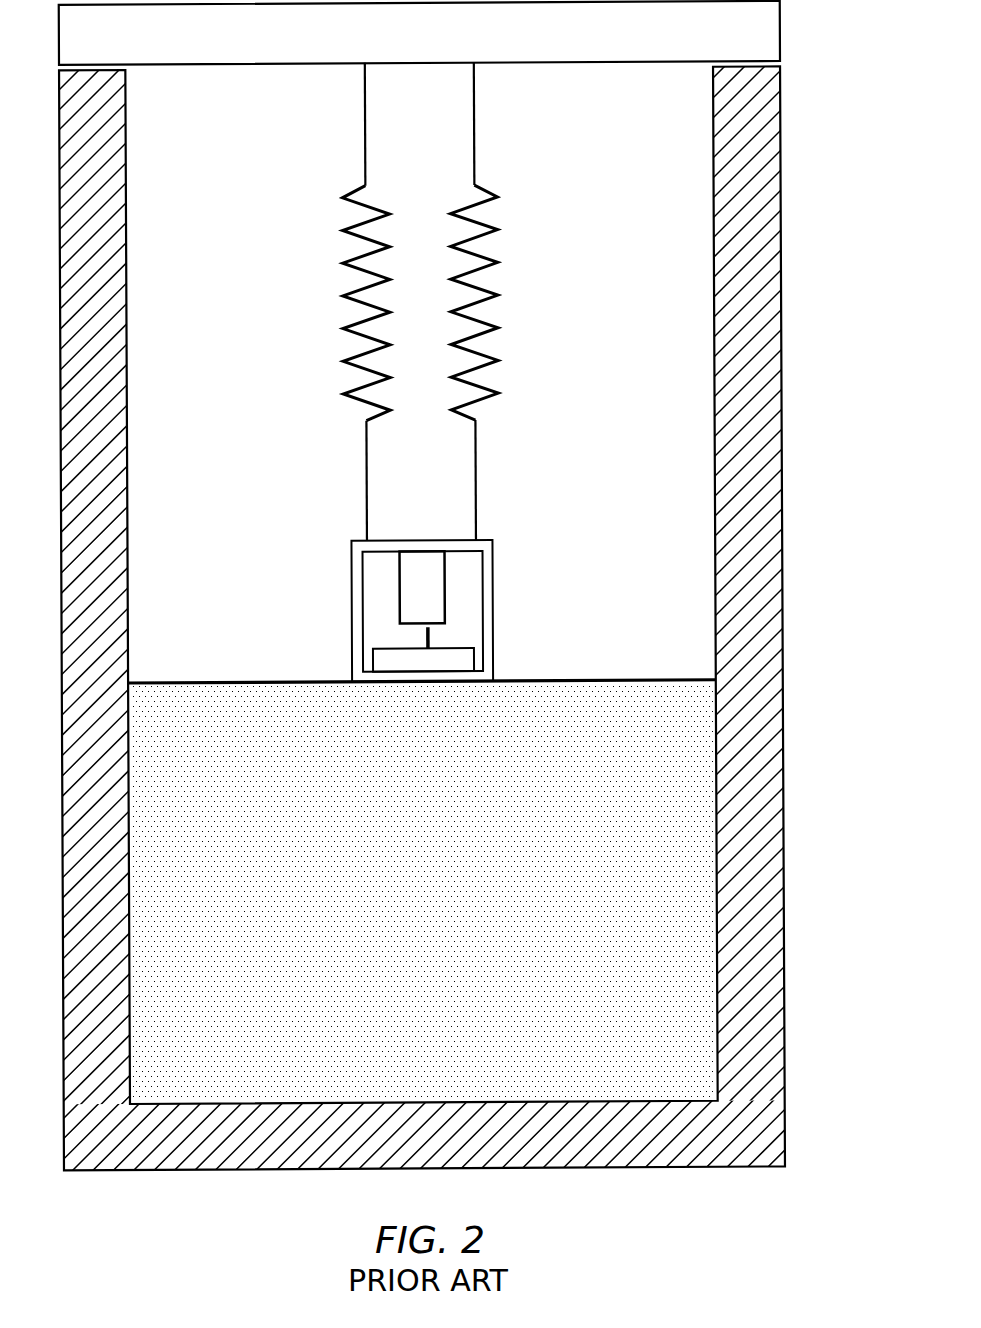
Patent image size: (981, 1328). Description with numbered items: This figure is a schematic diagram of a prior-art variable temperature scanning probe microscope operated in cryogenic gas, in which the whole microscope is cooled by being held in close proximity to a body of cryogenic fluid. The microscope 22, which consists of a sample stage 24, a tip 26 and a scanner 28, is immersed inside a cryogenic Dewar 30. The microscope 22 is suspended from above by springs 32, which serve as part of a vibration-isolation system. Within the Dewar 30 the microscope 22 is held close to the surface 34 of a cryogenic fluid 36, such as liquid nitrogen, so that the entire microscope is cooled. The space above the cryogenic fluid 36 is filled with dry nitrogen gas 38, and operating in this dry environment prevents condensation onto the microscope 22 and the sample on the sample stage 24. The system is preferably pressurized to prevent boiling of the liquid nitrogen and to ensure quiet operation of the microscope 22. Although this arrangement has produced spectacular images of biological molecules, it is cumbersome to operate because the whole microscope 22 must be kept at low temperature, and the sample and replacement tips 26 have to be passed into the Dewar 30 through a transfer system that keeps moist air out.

The microscope 22 is at (357, 606).
The sample stage 24 is at (467, 659).
The tip 26 is at (435, 638).
The scanner 28 is at (428, 562).
The cryogenic Dewar 30 is at (768, 464).
The springs 32 is at (368, 164).
The surface 34 is at (643, 678).
The cryogenic fluid 36 is at (228, 699).
The dry nitrogen gas 38 is at (700, 304).